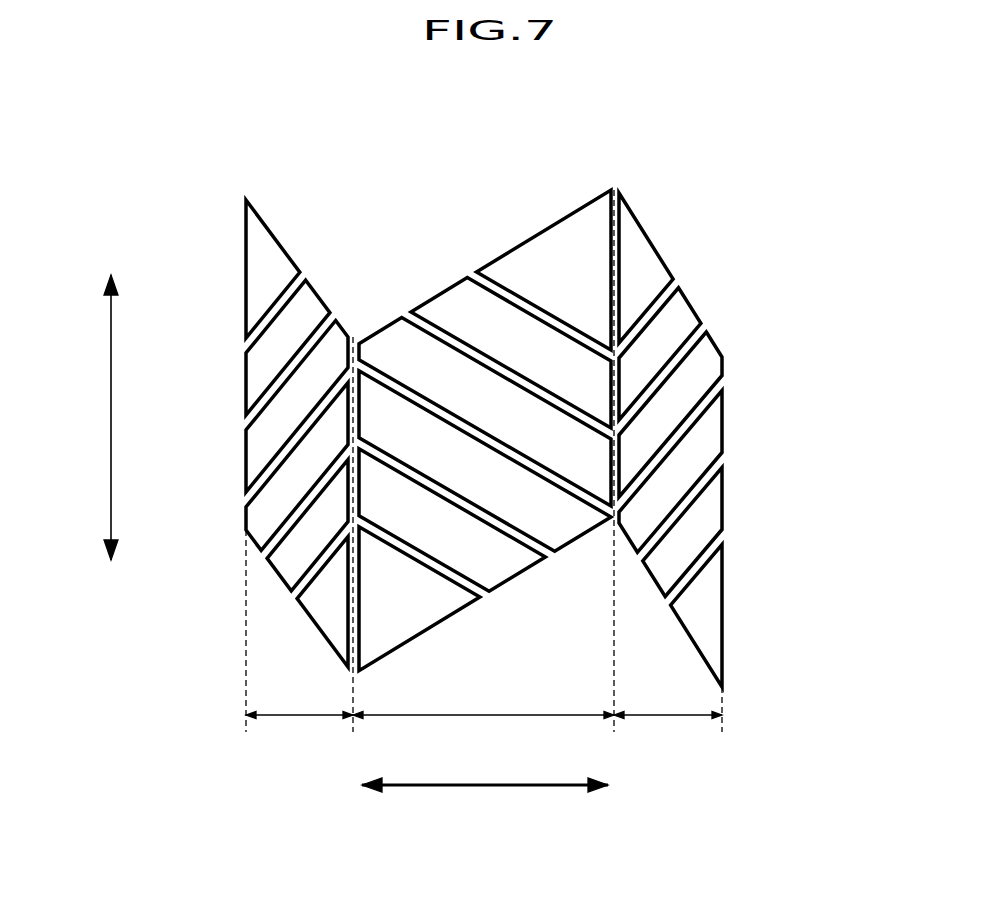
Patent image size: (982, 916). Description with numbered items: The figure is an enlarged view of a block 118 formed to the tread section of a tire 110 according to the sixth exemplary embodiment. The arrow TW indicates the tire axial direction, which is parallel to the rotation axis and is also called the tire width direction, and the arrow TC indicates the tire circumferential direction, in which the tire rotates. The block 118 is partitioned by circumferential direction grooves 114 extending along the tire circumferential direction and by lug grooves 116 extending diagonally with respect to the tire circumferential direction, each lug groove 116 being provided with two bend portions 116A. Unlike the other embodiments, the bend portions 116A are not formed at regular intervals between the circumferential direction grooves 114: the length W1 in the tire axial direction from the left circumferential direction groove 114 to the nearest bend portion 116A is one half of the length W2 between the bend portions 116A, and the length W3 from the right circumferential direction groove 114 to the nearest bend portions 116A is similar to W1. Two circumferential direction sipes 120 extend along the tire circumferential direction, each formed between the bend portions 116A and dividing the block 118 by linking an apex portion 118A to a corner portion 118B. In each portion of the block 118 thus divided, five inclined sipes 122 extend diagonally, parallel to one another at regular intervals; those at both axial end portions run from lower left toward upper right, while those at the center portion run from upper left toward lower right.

The tire 110 is at (719, 141).
The circumferential direction groove 114 is at (233, 414).
The lug groove 116 is at (505, 241).
The bend portion 116A is at (613, 172).
The block 118 is at (693, 298).
The apex portion 118A is at (621, 193).
The corner portion 118B is at (347, 332).
The circumferential direction sipe 120 is at (357, 508).
The inclined sipe 122 is at (270, 316).
The tire circumferential direction TC is at (110, 418).
The tire axial direction TW is at (483, 788).
The length W1 is at (298, 718).
The length W2 is at (484, 718).
The length W3 is at (667, 718).